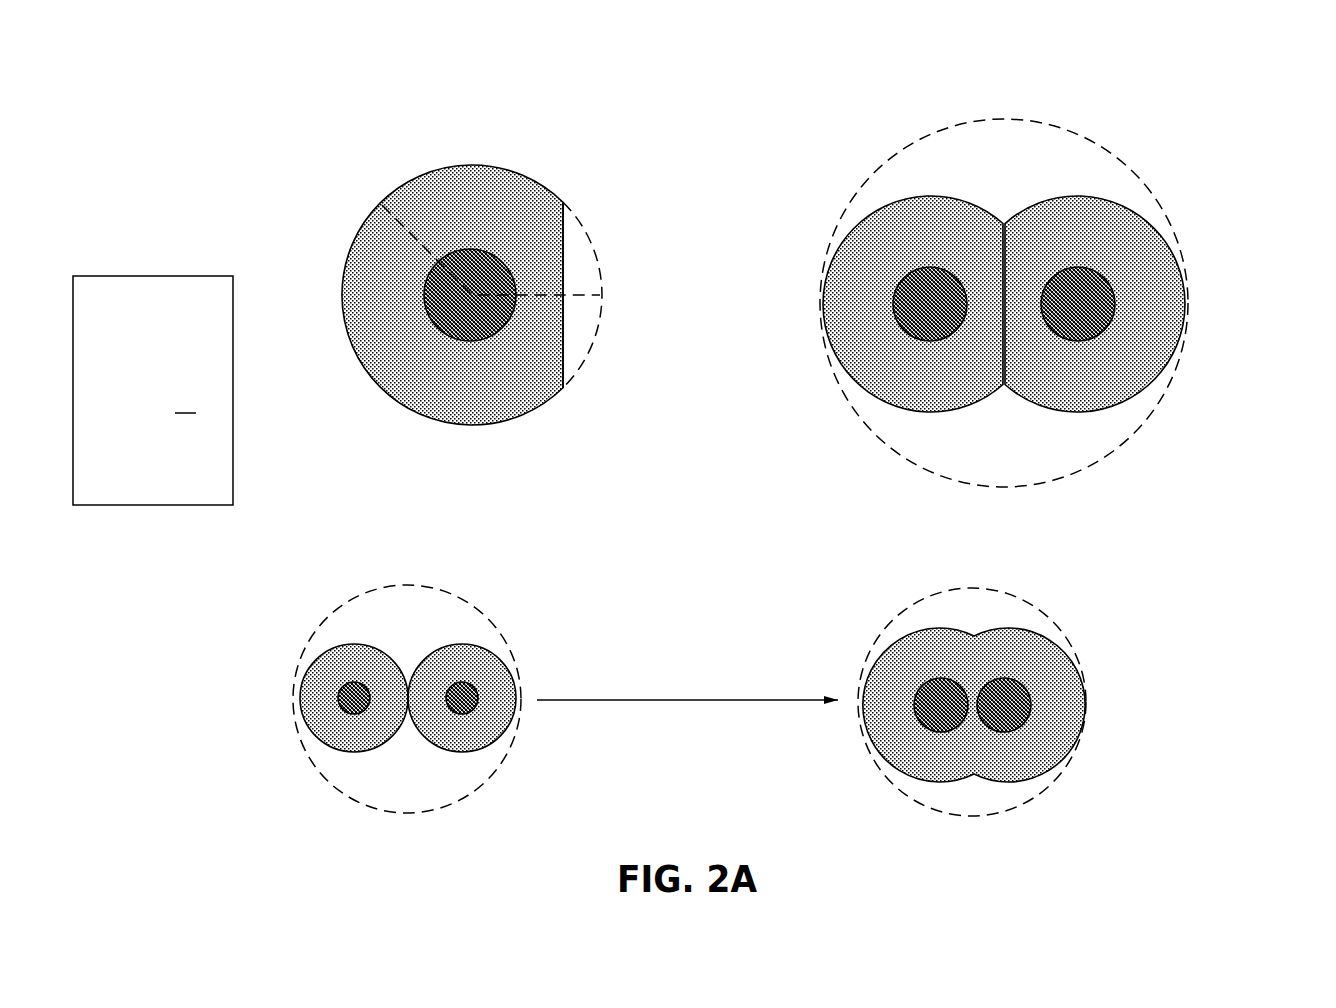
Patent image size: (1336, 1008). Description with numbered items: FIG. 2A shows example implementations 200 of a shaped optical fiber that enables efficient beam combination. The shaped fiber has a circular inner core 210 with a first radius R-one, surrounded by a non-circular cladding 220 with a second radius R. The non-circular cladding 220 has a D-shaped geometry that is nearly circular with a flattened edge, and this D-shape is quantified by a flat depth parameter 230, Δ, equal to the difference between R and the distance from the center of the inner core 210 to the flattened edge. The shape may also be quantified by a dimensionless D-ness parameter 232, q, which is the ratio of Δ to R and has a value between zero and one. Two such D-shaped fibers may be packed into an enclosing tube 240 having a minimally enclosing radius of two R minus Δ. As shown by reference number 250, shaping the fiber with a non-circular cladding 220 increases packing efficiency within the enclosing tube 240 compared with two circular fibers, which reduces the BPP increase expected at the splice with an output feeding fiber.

The example implementations of a shaped optical fiber 200 is at (238, 98).
The inner core 210 is at (462, 322).
The non-circular cladding 220 is at (468, 193).
The flat depth parameter 230 is at (582, 287).
The dimensionless D-ness parameter 232 is at (155, 276).
The enclosing tube 240 is at (1127, 168).
The increased packing efficiency 250 is at (687, 650).